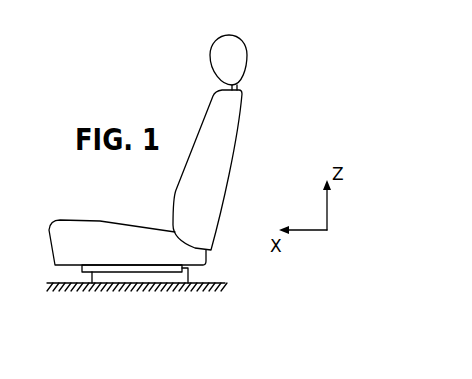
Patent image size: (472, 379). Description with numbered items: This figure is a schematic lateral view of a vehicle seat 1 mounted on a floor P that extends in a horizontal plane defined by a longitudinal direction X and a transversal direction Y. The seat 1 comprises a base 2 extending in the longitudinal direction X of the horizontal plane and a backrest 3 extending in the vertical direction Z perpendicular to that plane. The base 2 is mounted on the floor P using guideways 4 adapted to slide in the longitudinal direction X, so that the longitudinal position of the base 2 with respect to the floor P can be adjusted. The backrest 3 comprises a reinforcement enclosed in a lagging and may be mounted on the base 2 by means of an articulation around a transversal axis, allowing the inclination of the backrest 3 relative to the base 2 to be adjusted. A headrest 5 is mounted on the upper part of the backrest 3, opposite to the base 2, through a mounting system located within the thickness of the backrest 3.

The vehicle seat 1 is at (257, 123).
The base 2 is at (90, 237).
The backrest 3 is at (208, 194).
The guideways 4 is at (131, 271).
The headrest 5 is at (232, 60).
The floor P is at (216, 283).